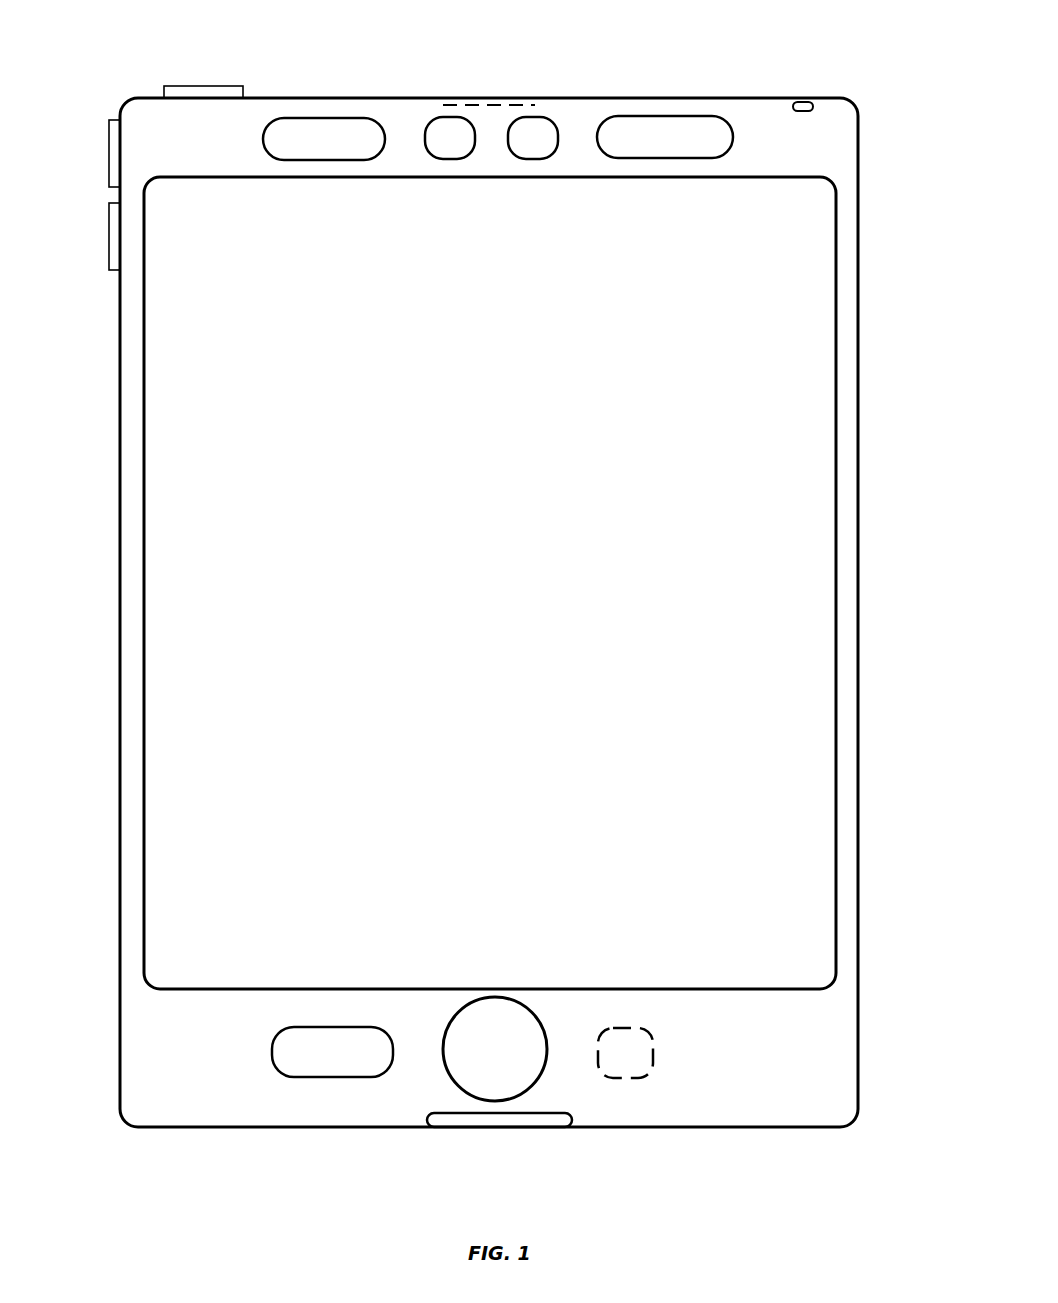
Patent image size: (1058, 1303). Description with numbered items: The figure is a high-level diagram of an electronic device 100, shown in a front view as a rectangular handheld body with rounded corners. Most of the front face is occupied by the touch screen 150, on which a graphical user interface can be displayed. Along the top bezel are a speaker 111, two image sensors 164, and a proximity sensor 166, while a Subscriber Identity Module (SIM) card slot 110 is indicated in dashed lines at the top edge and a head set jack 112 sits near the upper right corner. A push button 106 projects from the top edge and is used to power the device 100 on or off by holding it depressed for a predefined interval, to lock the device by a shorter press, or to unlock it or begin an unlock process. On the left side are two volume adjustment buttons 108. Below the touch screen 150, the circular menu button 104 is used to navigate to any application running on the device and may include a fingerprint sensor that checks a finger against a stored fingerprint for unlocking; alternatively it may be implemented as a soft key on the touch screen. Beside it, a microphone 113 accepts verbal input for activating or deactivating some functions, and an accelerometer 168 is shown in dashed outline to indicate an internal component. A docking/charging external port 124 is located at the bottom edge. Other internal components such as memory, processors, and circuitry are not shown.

The electronic device 100 is at (893, 98).
The menu button 104 is at (495, 1049).
The push button 106 is at (213, 86).
The volume adjustment buttons 108 is at (108, 150).
The Subscriber Identity Module (SIM) card slot 110 is at (468, 102).
The speaker 111 is at (324, 139).
The head set jack 112 is at (803, 102).
The microphone 113 is at (332, 1052).
The docking/charging external port 124 is at (541, 1129).
The touch screen 150 is at (835, 477).
The image sensors 164 is at (491, 138).
The proximity sensors 166 is at (665, 137).
The accelerometers 168 is at (625, 1053).